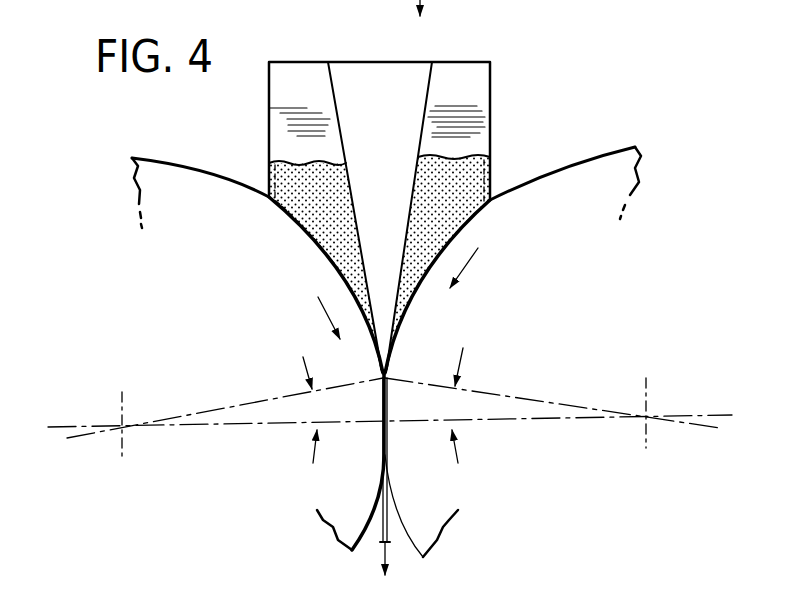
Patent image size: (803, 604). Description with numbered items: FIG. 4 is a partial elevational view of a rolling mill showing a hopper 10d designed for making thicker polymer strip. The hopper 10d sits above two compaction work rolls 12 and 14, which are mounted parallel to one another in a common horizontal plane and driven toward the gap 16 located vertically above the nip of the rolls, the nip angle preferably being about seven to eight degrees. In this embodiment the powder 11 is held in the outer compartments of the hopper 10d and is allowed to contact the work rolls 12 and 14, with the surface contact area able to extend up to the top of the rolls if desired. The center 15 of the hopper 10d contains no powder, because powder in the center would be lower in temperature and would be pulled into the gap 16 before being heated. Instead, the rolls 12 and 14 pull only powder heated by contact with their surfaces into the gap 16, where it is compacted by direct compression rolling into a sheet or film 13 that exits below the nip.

The hopper 10d is at (422, 54).
The center of hopper 15 is at (396, 140).
The powder material 11 is at (320, 205).
The compaction work roll 14 is at (236, 190).
The compaction work roll 12 is at (522, 182).
The gap 16 is at (386, 379).
The sheet or film 13 is at (388, 522).